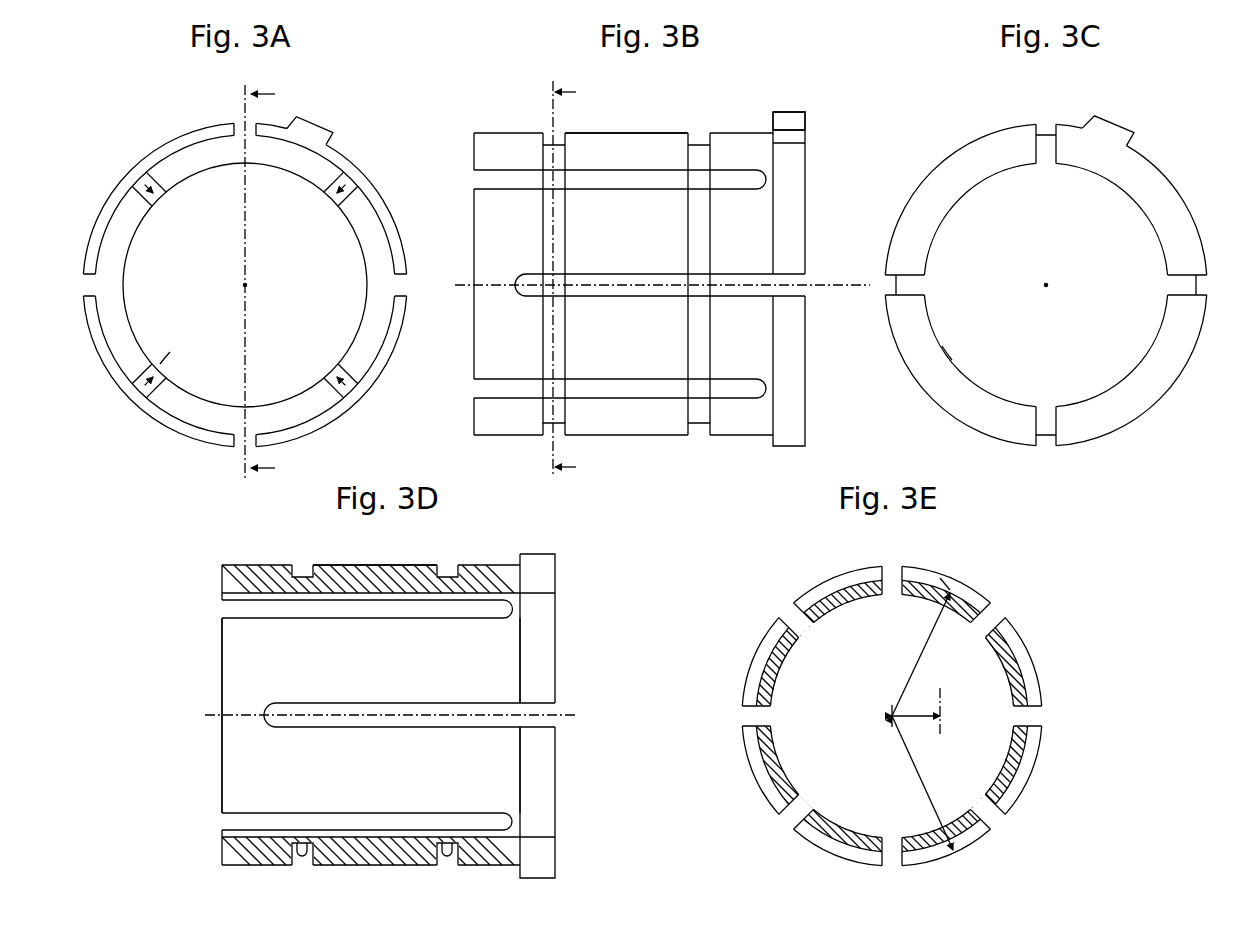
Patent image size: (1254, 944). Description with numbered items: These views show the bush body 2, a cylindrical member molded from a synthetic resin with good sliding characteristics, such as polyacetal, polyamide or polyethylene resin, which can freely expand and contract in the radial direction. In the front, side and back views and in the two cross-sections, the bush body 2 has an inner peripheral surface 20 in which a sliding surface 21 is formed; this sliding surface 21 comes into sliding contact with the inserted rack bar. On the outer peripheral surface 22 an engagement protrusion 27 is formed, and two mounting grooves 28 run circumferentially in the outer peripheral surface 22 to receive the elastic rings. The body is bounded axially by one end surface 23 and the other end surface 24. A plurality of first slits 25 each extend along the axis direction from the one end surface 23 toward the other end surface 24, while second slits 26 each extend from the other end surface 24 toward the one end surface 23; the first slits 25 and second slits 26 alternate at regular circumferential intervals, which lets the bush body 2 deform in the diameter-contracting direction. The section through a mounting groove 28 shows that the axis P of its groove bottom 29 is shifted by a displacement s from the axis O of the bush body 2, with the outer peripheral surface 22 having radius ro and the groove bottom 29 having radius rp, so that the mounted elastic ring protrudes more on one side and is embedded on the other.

In FIG. 3A, the bush body 2 is at (235, 273).
In FIG. 3B, the bush body 2 is at (639, 273).
In FIG. 3C, the bush body 2 is at (1029, 276).
In FIG. 3D, the bush body 2 is at (382, 693).
In FIG. 3E, the bush body 2 is at (869, 698).
In FIG. 3A, the inner peripheral surface 20 is at (130, 307).
In FIG. 3C, the inner peripheral surface 20 is at (932, 310).
In FIG. 3D, the inner peripheral surface 20 is at (232, 670).
In FIG. 3E, the inner peripheral surface 20 is at (869, 716).
In FIG. 3A, the sliding surface 21 is at (160, 366).
In FIG. 3C, the sliding surface 21 is at (952, 360).
In FIG. 3D, the sliding surface 21 is at (235, 767).
In FIG. 3B, the outer peripheral surface 22 is at (655, 131).
In FIG. 3D, the outer peripheral surface 22 is at (375, 563).
In FIG. 3B, the one end surface 23 is at (806, 196).
In FIG. 3C, the one end surface 23 is at (1150, 174).
In FIG. 3D, the one end surface 23 is at (557, 654).
In FIG. 3A, the other end surface 24 is at (122, 228).
In FIG. 3B, the other end surface 24 is at (472, 240).
In FIG. 3D, the other end surface 24 is at (220, 648).
In FIG. 3B, the first slit 25 is at (808, 286).
In FIG. 3C, the first slit 25 is at (1040, 122).
In FIG. 3D, the first slit 25 is at (560, 723).
In FIG. 3E, the first slit 25 is at (888, 568).
In FIG. 3A, the second slit 26 is at (150, 186).
In FIG. 3B, the second slit 26 is at (471, 178).
In FIG. 3D, the second slit 26 is at (220, 608).
In FIG. 3E, the second slit 26 is at (797, 616).
In FIG. 3A, the engagement protrusion 27 is at (304, 118).
In FIG. 3B, the engagement protrusion 27 is at (793, 112).
In FIG. 3C, the engagement protrusion 27 is at (1110, 118).
In FIG. 3B, the mounting groove 28 is at (552, 132).
In FIG. 3D, the mounting groove 28 is at (300, 563).
In FIG. 3E, the mounting groove 28 is at (836, 576).
In FIG. 3B, the groove bottom 29 is at (552, 433).
In FIG. 3D, the groove bottom 29 is at (292, 858).
In FIG. 3E, the groove bottom 29 is at (946, 578).